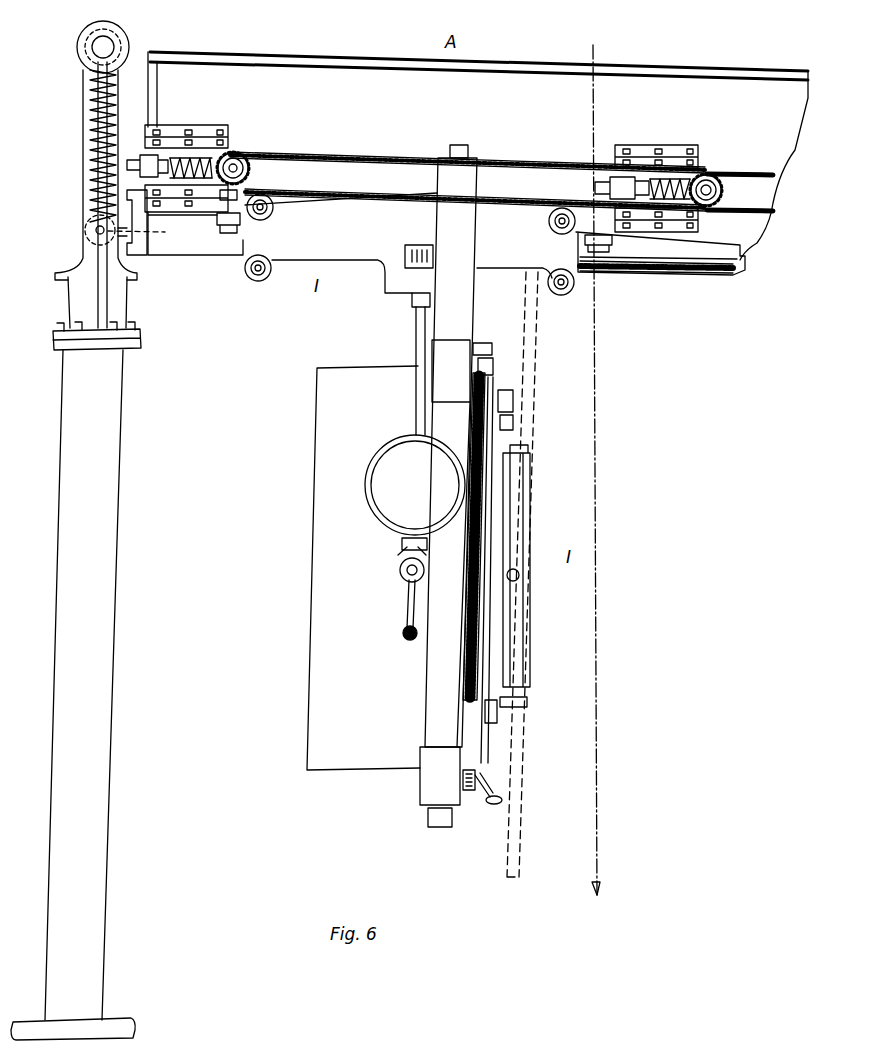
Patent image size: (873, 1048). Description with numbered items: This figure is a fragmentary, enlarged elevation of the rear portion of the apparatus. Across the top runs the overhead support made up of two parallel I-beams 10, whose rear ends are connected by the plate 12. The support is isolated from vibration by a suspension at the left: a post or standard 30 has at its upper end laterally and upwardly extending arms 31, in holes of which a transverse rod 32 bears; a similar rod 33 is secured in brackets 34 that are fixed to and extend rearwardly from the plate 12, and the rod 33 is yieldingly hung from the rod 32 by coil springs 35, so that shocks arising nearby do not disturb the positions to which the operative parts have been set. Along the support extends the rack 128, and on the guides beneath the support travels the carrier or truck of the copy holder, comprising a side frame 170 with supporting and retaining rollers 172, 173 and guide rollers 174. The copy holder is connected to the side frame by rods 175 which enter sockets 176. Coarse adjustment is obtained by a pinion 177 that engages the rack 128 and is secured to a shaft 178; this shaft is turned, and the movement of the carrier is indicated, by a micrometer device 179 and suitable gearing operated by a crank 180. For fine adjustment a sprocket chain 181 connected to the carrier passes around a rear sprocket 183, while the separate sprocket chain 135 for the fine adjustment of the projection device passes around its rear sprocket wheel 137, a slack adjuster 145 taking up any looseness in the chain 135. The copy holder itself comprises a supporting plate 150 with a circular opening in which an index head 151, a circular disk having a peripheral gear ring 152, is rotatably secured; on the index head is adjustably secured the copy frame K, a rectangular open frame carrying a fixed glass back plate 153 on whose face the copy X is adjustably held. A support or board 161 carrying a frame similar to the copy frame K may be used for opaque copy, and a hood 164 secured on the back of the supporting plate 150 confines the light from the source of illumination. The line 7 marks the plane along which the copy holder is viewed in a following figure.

The post or standard 30 is at (76, 658).
The arms 31 is at (83, 245).
The transverse rod 32 is at (108, 47).
The rod 33 is at (150, 233).
The brackets 34 is at (125, 205).
The coil springs 35 is at (95, 122).
The I-beams 10 is at (479, 156).
The plate 12 is at (157, 88).
The rear sprocket 183 is at (245, 160).
The sprocket chain 181 is at (362, 154).
The sprocket chain 135 is at (773, 173).
The rear sprocket wheel 137 is at (725, 190).
The slack adjuster 145 is at (700, 158).
The side frame 170 is at (446, 241).
The supporting and retaining rollers 172 is at (270, 193).
The supporting and retaining rollers 173 is at (262, 283).
The guide rollers 174 is at (225, 235).
The sockets 176 is at (448, 486).
The pinion 177 is at (417, 245).
The shaft 178 is at (416, 327).
The rods 175 is at (440, 421).
The micrometer device 179 is at (415, 492).
The crank 180 is at (407, 610).
The hood 164 is at (308, 740).
The supporting plate 150 is at (463, 686).
The index head 151 is at (463, 692).
The peripheral gear ring 152 is at (476, 617).
The glass back plate 153 is at (522, 487).
The support or board 161 is at (520, 828).
The rack 128 is at (650, 275).
The section line 7 is at (591, 472).
The copy frame K is at (490, 447).
The copy X is at (530, 524).